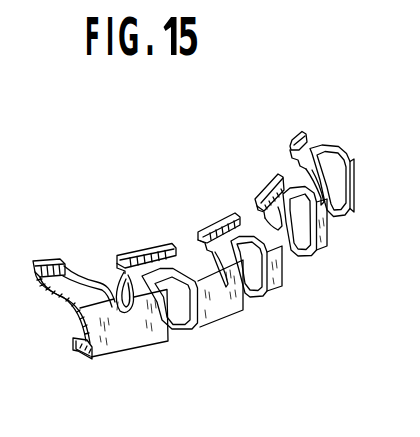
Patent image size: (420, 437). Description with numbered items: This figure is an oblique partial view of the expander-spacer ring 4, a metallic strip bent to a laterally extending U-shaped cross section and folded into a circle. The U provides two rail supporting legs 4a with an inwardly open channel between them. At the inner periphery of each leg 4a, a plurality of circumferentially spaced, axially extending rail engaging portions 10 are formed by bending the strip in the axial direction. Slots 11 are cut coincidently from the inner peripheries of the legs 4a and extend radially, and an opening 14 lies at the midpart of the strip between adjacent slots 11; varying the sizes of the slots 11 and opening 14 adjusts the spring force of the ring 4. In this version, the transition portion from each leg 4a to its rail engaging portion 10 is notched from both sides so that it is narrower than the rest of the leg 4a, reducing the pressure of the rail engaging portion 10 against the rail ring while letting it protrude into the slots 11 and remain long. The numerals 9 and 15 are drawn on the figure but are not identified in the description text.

The expander-spacer ring 4 is at (50, 254).
The rail supporting leg 4a is at (120, 300).
The side plate 9 is at (206, 312).
The rail engaging portion 10 is at (140, 272).
The slot 11 is at (110, 282).
The opening 14 is at (183, 320).
The edge portion 15 is at (120, 305).